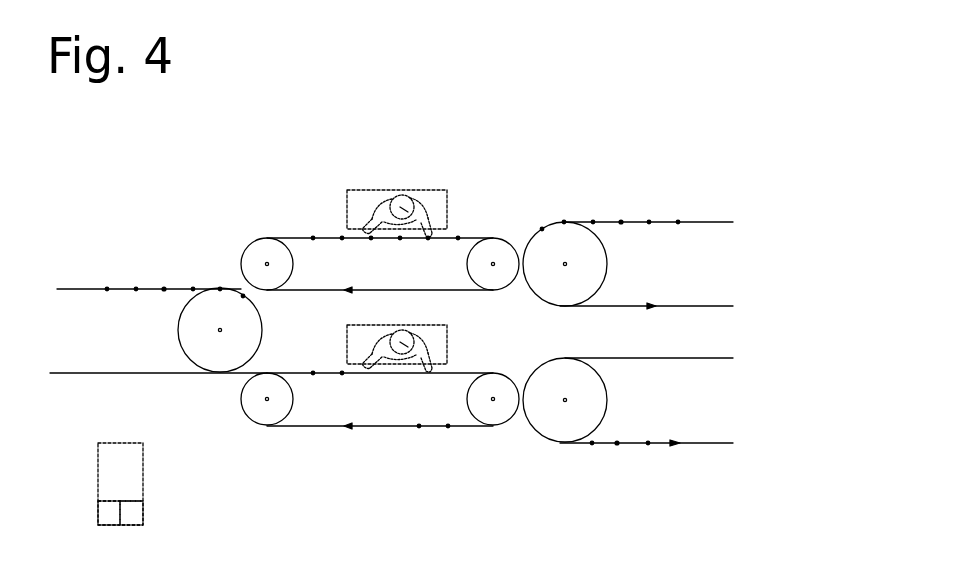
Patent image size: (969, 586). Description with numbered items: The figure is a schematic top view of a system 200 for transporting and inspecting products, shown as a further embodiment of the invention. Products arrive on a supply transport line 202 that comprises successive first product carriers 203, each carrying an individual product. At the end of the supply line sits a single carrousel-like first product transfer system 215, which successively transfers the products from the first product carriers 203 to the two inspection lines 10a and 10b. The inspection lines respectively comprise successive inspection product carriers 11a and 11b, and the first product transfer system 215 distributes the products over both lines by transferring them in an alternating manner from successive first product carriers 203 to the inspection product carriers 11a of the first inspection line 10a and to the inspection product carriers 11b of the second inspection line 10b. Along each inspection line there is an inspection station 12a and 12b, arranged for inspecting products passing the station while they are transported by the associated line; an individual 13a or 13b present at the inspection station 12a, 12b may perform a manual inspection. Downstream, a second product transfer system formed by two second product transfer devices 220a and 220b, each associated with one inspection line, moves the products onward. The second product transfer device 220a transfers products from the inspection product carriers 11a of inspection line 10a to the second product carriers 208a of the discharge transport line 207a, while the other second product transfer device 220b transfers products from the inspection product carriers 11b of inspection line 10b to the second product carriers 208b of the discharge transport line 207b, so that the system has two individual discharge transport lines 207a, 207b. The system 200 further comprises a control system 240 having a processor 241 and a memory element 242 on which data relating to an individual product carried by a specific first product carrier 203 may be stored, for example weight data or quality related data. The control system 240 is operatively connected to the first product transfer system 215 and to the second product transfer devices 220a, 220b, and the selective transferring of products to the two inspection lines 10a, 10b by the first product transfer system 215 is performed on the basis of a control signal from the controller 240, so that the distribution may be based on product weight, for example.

The system 200 is at (690, 94).
The supply transport line 202 is at (94, 278).
The first product carriers 203 is at (164, 287).
The first product transfer system 215 is at (231, 281).
The inspection line 10a is at (296, 214).
The inspection product carriers 11a is at (458, 238).
The inspection station 12a is at (418, 182).
The individual 13a is at (400, 206).
The inspection line 10b is at (324, 446).
The inspection product carriers 11b is at (312, 372).
The inspection station 12b is at (466, 342).
The individual 13b is at (401, 341).
The second product transfer device 220a is at (553, 208).
The discharge transport line 207a is at (710, 192).
The second product carriers 208a is at (618, 220).
The second product transfer device 220b is at (574, 459).
The discharge transport line 207b is at (708, 458).
The second product carriers 208b is at (618, 441).
The control system 240 is at (127, 460).
The processor 241 is at (106, 516).
The memory element 242 is at (132, 520).